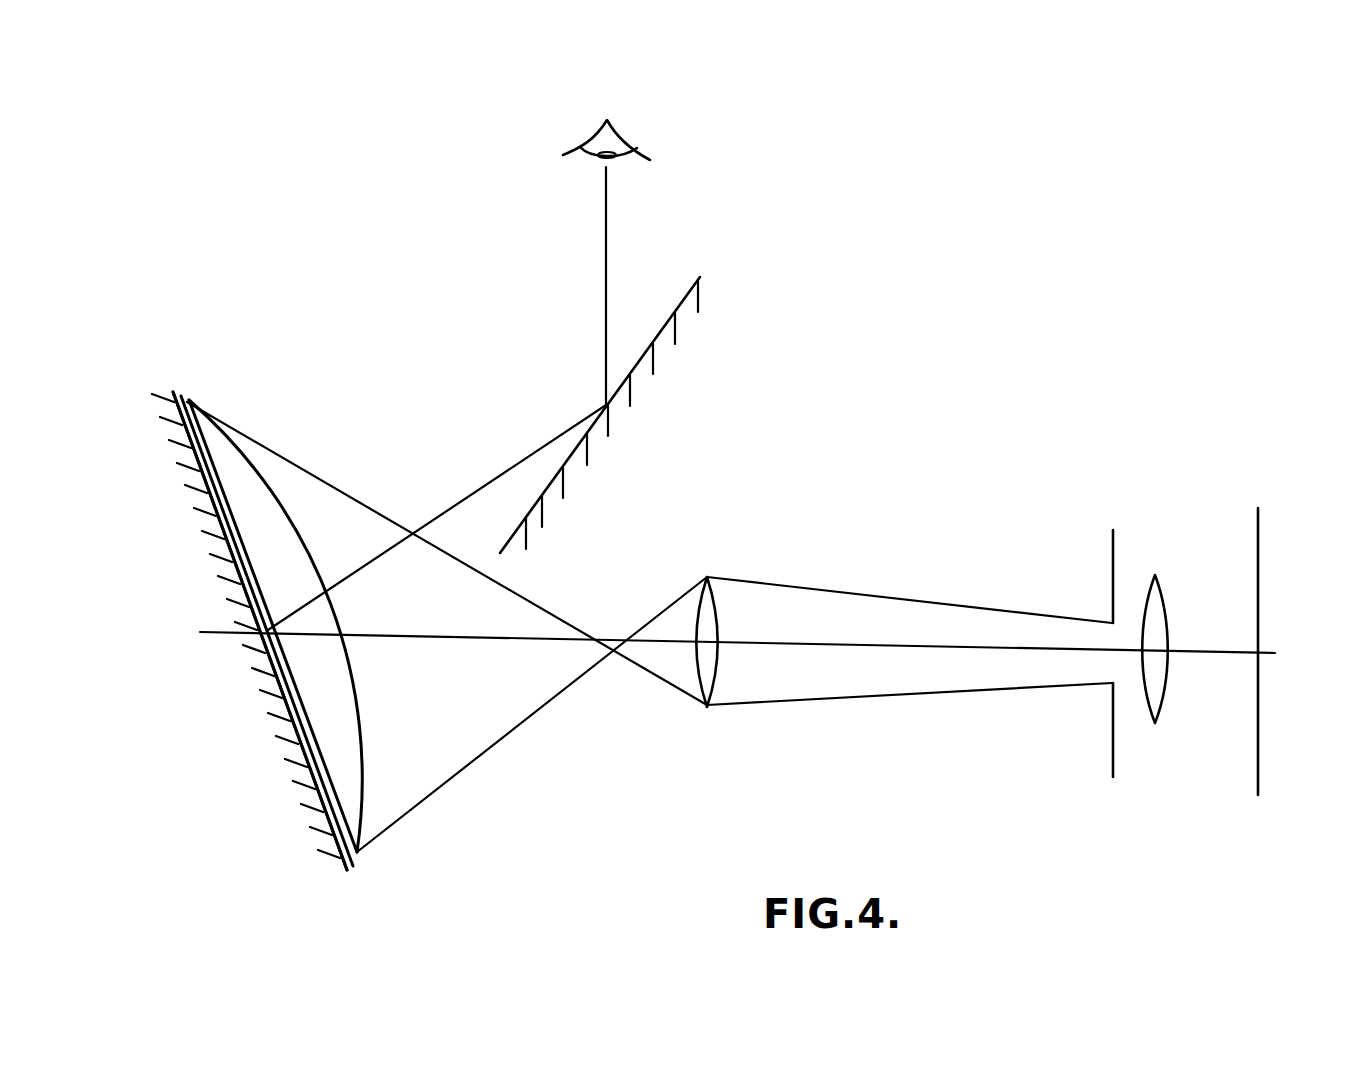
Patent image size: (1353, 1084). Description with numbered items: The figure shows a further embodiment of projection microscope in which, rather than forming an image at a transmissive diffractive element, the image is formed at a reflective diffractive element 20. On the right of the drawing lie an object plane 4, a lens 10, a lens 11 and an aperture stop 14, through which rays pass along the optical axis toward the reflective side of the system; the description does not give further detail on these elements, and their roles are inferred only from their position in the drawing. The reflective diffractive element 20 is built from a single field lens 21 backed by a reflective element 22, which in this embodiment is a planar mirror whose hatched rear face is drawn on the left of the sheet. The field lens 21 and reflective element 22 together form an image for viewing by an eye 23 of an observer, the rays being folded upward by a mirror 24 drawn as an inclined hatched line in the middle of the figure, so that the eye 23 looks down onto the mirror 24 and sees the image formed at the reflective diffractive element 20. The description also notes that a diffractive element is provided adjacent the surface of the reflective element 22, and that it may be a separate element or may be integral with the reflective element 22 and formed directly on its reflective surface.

The image plane / object plane 4 is at (1259, 773).
The lens 10 is at (1157, 578).
The lens 11 is at (709, 577).
The aperture stop 14 is at (1110, 552).
The reflective diffractive element 20 is at (368, 872).
The field lens 21 is at (357, 847).
The reflective element 22 is at (310, 803).
The eye 23 is at (613, 141).
The mirror 24 is at (624, 385).